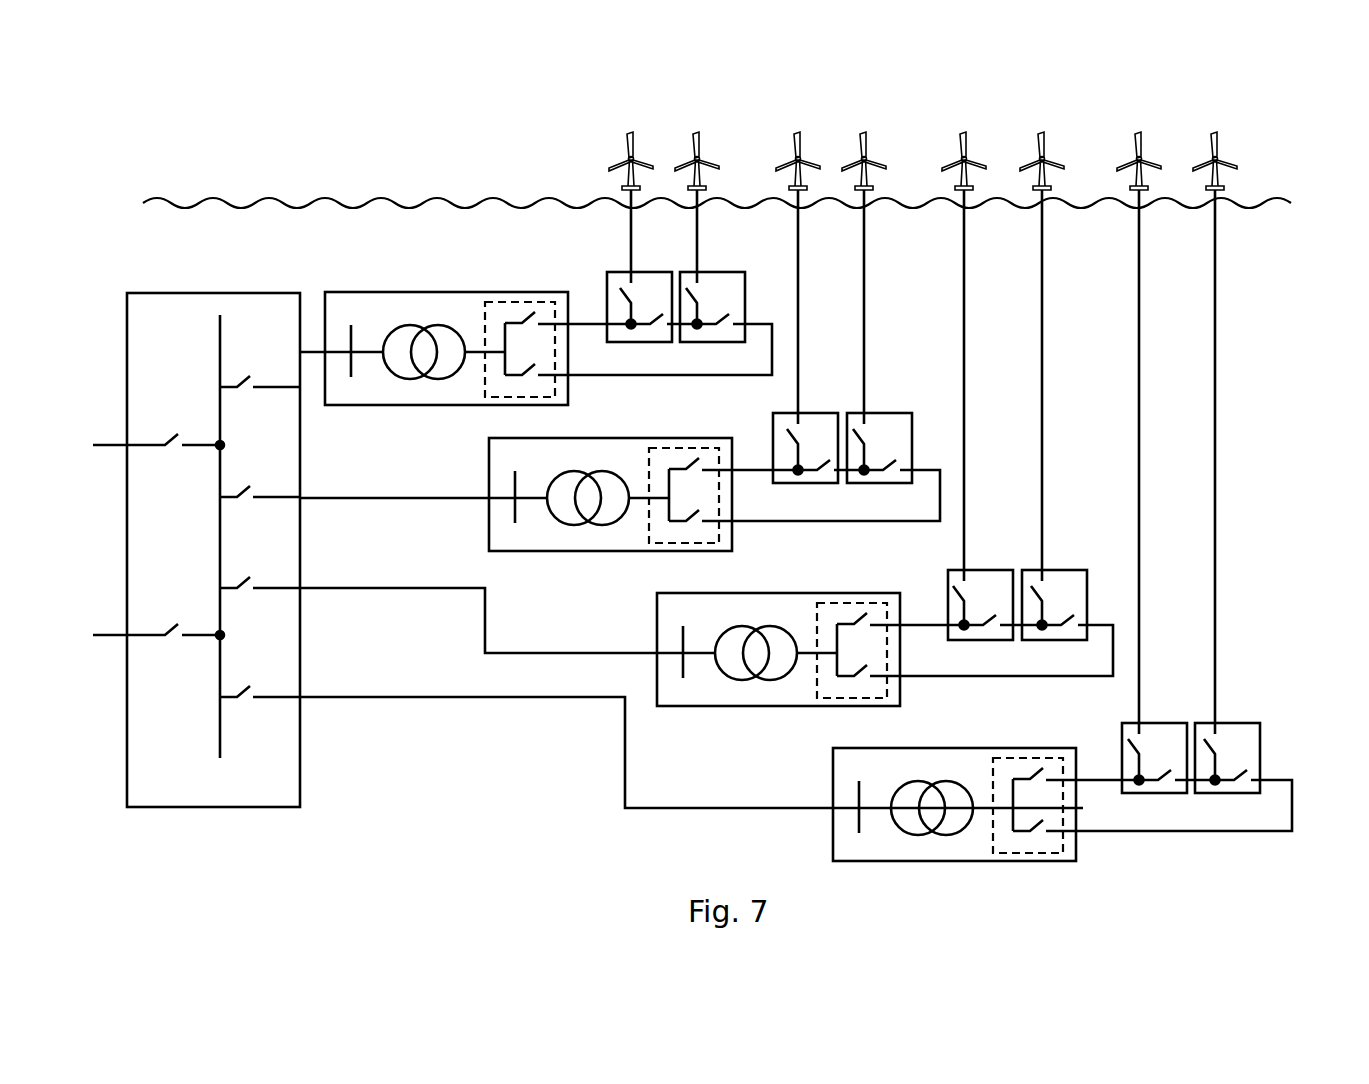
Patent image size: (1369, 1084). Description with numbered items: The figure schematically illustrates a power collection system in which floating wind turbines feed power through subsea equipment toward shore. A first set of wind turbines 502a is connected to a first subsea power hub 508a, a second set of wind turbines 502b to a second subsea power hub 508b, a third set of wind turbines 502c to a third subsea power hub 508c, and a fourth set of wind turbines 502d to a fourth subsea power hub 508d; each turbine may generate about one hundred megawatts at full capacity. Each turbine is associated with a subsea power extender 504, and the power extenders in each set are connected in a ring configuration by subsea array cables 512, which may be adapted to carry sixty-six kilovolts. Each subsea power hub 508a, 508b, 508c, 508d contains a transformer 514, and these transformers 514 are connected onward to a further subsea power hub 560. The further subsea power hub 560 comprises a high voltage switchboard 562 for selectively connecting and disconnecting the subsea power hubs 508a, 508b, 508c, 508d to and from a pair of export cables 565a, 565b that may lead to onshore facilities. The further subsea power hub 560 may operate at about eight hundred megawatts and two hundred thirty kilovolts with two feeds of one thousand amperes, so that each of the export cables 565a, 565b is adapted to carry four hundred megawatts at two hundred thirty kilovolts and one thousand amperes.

The first set of wind turbines 502a is at (599, 153).
The second set of wind turbines 502b is at (847, 136).
The third set of wind turbines 502c is at (1007, 129).
The fourth set of wind turbines 502d is at (1187, 119).
The subsea power extender 504 is at (596, 267).
The first subsea power hub 508a is at (408, 291).
The second subsea power hub 508b is at (484, 477).
The third subsea power hub 508c is at (649, 618).
The fourth subsea power hub 508d is at (824, 771).
The subsea array cable 512 is at (1235, 836).
The transformer 514 is at (374, 326).
The further subsea power hub 560 is at (134, 286).
The high voltage switchboard 562 is at (265, 344).
The first export cable 565a is at (98, 434).
The second export cable 565b is at (96, 630).